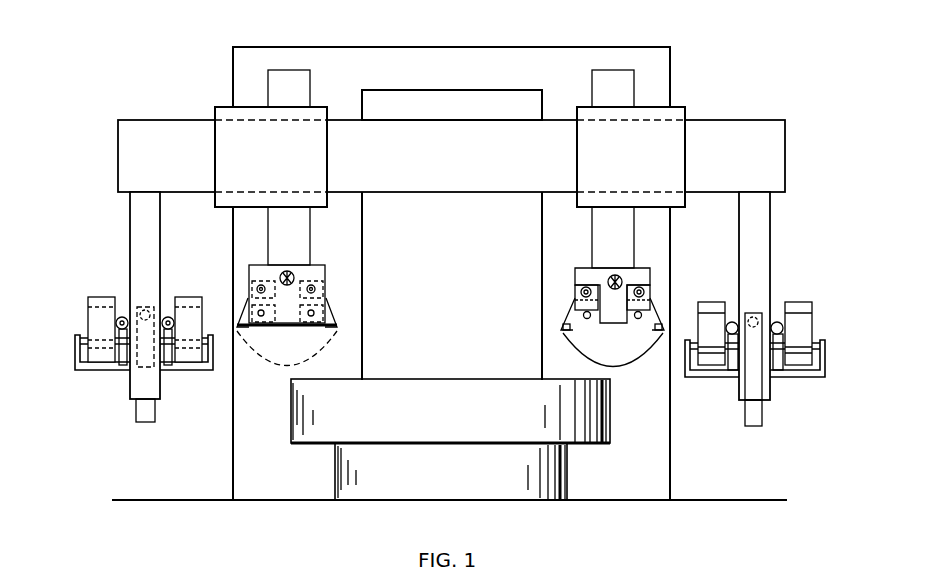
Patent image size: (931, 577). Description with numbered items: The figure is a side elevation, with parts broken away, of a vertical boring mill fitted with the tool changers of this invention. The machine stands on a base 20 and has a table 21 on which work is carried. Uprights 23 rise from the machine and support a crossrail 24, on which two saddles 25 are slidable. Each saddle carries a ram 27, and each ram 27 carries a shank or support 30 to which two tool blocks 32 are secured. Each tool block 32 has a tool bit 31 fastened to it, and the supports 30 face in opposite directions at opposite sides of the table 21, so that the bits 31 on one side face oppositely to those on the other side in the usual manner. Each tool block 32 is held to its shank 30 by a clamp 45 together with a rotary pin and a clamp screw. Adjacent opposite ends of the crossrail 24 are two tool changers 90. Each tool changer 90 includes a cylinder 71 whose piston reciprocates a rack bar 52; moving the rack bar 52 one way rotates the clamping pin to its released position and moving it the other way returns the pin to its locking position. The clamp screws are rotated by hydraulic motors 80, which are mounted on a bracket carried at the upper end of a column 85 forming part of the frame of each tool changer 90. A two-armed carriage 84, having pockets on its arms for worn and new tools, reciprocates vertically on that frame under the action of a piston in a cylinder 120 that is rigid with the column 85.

The base 20 is at (558, 478).
The table 21 is at (607, 420).
The uprights 23 is at (362, 364).
The crossrail 24 is at (449, 178).
The saddles 25 is at (450, 157).
The rams 27 is at (310, 235).
The shank or support 30 is at (325, 268).
The tool bit 31 is at (450, 335).
The tool blocks 32 is at (268, 328).
The clamp 45 is at (249, 287).
The rack bar 52 is at (287, 271).
The cylinders 71 is at (145, 308).
The hydraulic motors 80 is at (168, 317).
The two-armed carriage 84 is at (88, 318).
The column 85 is at (130, 230).
The tool changers 90 is at (58, 347).
The cylinder 120 is at (148, 410).